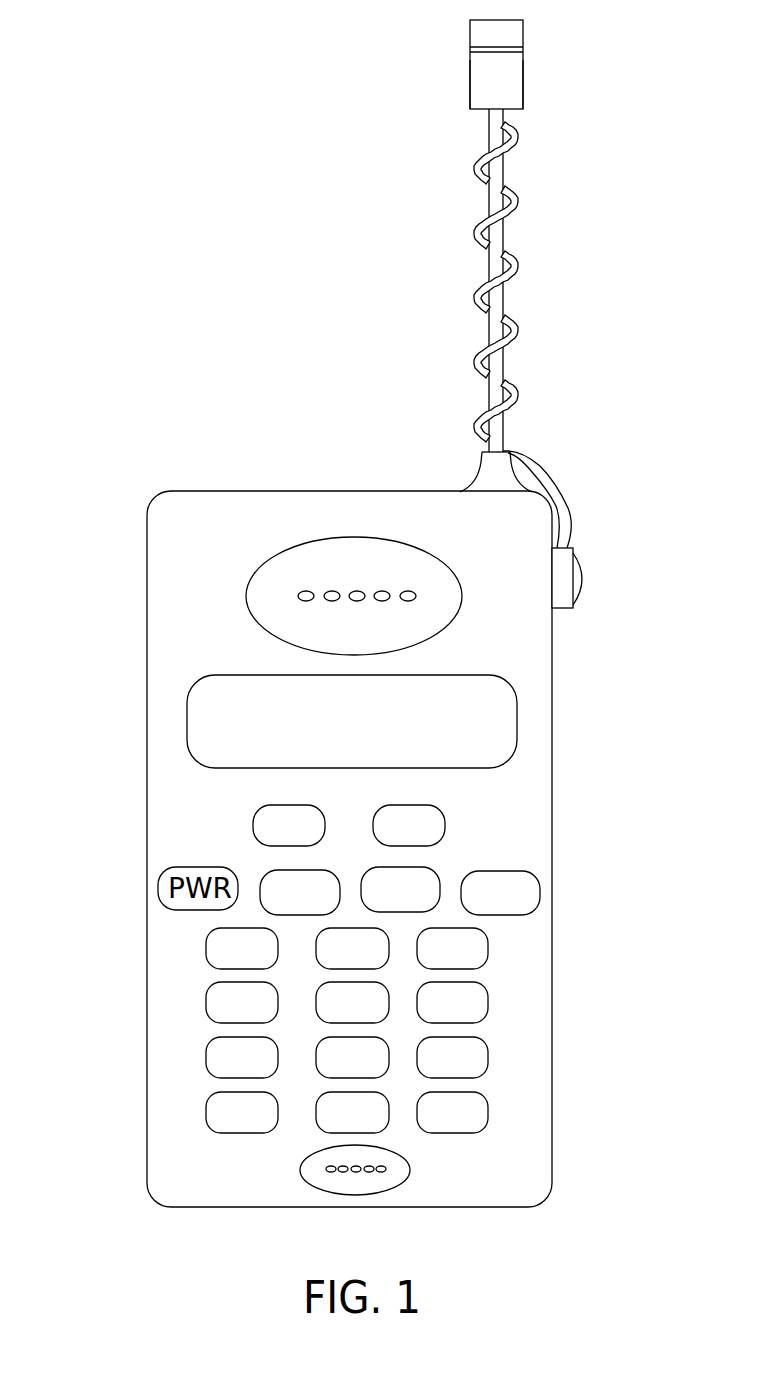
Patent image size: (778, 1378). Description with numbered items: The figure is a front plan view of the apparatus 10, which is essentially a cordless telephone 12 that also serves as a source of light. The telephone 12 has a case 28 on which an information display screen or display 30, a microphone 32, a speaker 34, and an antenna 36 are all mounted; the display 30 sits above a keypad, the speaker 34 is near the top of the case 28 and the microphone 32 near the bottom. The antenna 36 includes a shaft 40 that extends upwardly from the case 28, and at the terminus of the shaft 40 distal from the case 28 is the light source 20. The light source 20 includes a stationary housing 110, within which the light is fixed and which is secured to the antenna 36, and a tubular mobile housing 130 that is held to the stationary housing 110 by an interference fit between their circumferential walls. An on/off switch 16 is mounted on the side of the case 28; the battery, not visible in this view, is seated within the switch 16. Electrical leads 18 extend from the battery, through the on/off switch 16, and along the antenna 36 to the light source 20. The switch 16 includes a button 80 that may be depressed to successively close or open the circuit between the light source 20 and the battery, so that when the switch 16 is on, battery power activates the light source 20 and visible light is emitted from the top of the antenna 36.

The apparatus 10 is at (218, 256).
The cordless telephone 12 is at (147, 556).
The on/off switch 16 is at (567, 608).
The electrical leads 18 is at (477, 367).
The light source 20 is at (470, 76).
The case 28 is at (163, 617).
The information display screen 30 is at (187, 731).
The microphone 32 is at (300, 1170).
The speaker 34 is at (283, 556).
The antenna 36 is at (487, 267).
The shaft 40 is at (500, 237).
The button 80 is at (577, 575).
The stationary housing 110 is at (507, 86).
The tubular mobile housing 130 is at (505, 37).